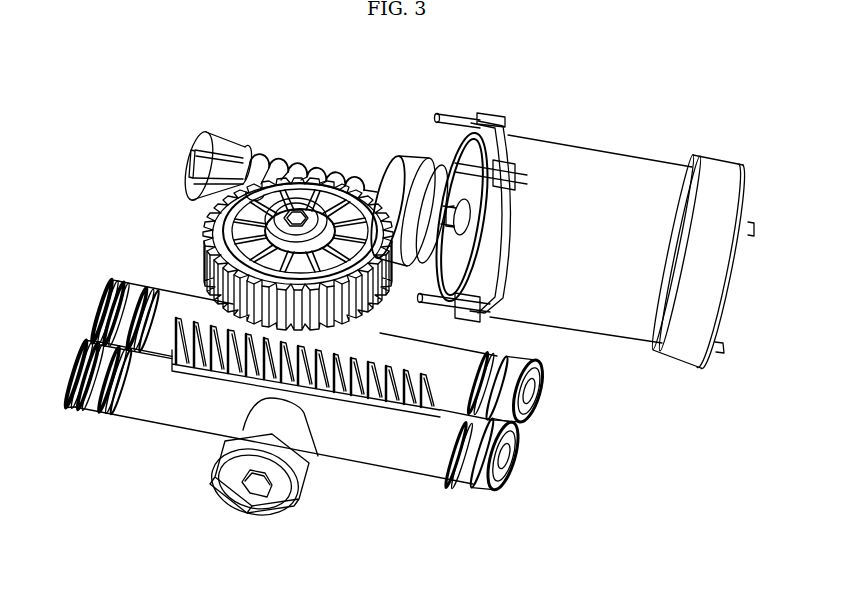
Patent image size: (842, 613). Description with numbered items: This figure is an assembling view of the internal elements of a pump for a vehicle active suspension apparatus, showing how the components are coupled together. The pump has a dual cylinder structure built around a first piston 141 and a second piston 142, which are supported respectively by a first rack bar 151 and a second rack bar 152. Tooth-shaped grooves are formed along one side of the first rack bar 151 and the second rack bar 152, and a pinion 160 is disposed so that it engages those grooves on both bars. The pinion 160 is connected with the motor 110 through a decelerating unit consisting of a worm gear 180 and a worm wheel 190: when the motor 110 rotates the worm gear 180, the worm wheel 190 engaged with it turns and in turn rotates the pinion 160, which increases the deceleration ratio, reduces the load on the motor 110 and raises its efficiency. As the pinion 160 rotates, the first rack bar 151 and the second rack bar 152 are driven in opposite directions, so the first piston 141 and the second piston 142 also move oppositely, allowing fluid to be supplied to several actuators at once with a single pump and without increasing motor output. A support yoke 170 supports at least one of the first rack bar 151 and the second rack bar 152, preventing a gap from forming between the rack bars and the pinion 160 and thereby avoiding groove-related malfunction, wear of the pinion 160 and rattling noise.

The motor 110 is at (597, 167).
The first piston 141 is at (128, 296).
The first rack bar 151 is at (181, 300).
The second piston 142 is at (86, 404).
The second rack bar 152 is at (175, 418).
The pinion 160 is at (323, 393).
The support yoke 170 is at (268, 505).
The worm gear 180 is at (265, 158).
The worm wheel 190 is at (208, 223).